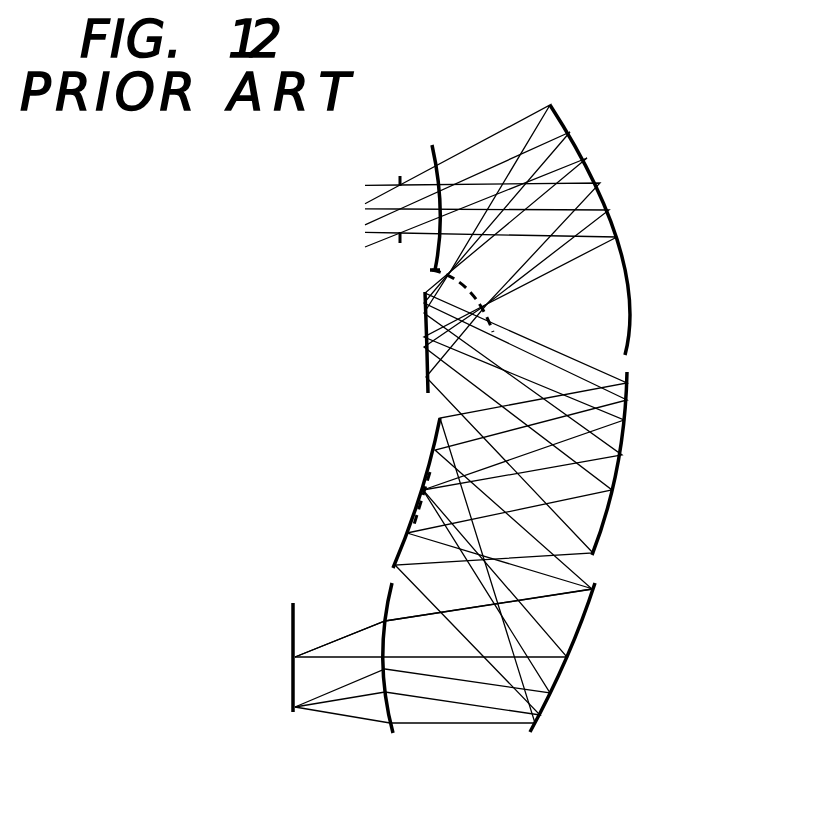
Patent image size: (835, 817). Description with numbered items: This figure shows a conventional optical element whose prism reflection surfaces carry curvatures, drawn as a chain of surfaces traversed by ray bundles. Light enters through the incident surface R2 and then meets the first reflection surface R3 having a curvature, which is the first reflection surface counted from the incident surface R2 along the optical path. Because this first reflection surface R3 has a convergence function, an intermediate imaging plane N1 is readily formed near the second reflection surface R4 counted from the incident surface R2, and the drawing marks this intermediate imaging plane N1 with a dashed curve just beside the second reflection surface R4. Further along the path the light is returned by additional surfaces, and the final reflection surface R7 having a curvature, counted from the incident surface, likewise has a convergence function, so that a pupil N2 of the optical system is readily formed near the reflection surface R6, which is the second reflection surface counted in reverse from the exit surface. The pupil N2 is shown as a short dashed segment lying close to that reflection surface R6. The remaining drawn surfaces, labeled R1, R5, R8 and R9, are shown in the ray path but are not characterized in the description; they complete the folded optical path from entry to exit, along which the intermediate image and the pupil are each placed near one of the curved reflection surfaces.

The stop (entrance pupil) R1 is at (401, 186).
The incident surface R2 is at (436, 160).
The first reflection surface R3 is at (600, 170).
The intermediate imaging plane N1 is at (430, 302).
The second reflection surface R4 is at (428, 373).
The reflecting surface R5 is at (626, 438).
The pupil N2 is at (428, 474).
The reflection surface R6 is at (402, 540).
The final reflection surface R7 is at (577, 647).
The refracting surface R8 is at (381, 718).
The image plane R9 is at (292, 678).